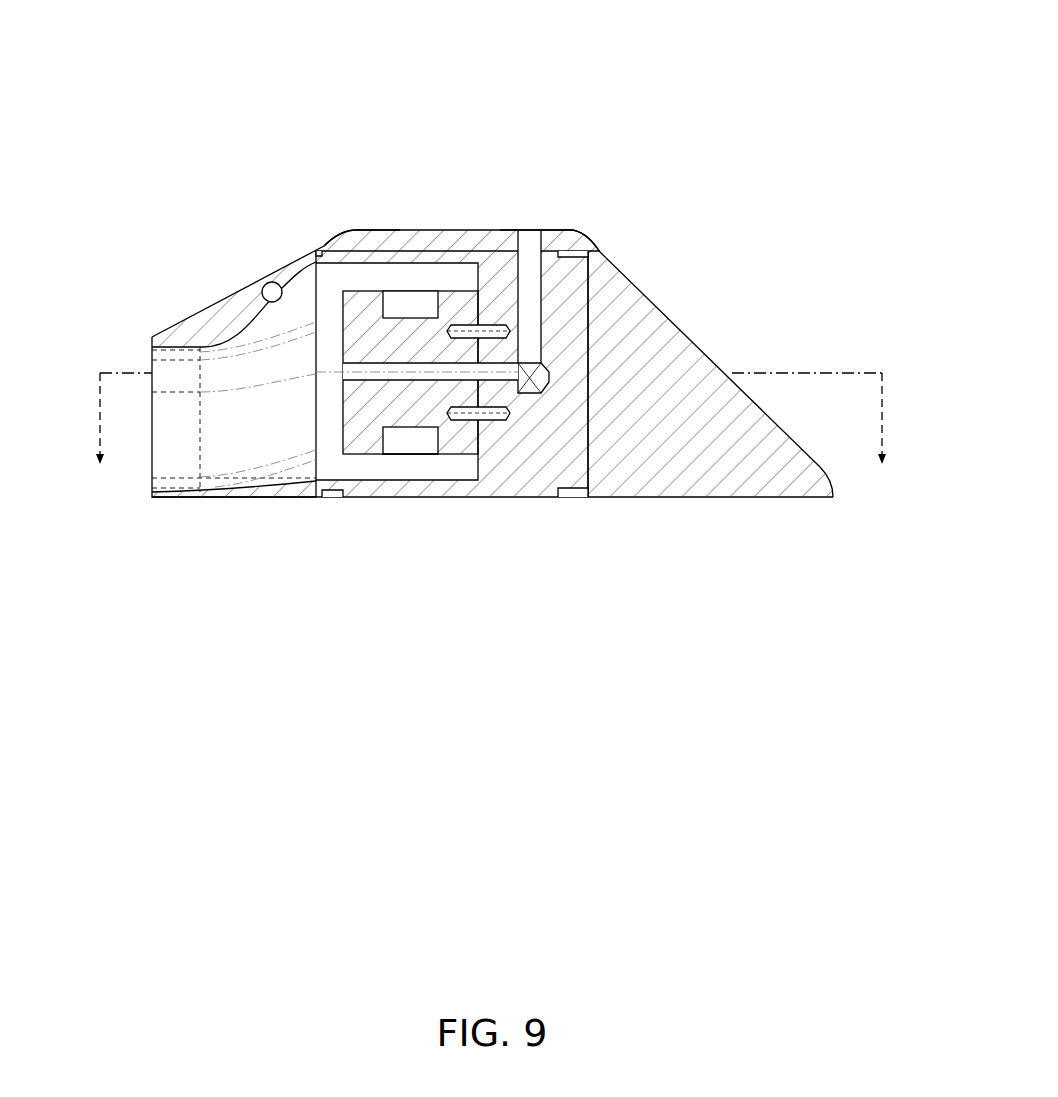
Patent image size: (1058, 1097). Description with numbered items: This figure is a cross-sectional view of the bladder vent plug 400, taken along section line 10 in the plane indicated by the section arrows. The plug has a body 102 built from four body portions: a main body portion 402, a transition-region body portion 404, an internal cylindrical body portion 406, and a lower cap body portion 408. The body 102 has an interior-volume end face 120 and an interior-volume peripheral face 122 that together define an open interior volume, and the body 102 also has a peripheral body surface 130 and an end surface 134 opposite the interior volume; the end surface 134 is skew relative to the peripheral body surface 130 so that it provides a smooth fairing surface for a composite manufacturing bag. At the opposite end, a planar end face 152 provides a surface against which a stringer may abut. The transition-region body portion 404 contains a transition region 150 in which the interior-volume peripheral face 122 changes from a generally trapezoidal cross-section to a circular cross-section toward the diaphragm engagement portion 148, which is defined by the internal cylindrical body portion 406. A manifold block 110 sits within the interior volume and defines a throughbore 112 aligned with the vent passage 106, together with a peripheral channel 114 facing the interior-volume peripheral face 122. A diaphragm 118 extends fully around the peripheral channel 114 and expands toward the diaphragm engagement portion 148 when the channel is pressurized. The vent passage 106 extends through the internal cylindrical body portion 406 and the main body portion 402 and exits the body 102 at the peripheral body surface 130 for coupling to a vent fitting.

The section line / wearable device 10 is at (785, 58).
The bladder vent plug 400 is at (760, 118).
The body 102 is at (627, 223).
The vent passage 106 is at (537, 237).
The manifold block 110 is at (363, 458).
The throughbore 112 is at (343, 378).
The peripheral channel 114 is at (425, 428).
The diaphragm 118 is at (410, 455).
The interior-volume end face 120 is at (478, 280).
The interior-volume peripheral face 122 is at (262, 300).
The peripheral body surface 130 is at (388, 230).
The end surface 134 is at (672, 312).
The diaphragm engagement portion 148 is at (403, 285).
The transition region 150 is at (218, 457).
The end face 152 is at (152, 340).
The main body portion 402 is at (500, 223).
The transition-region body portion 404 is at (183, 317).
The internal cylindrical body portion 406 is at (350, 247).
The lower cap body portion 408 is at (573, 500).